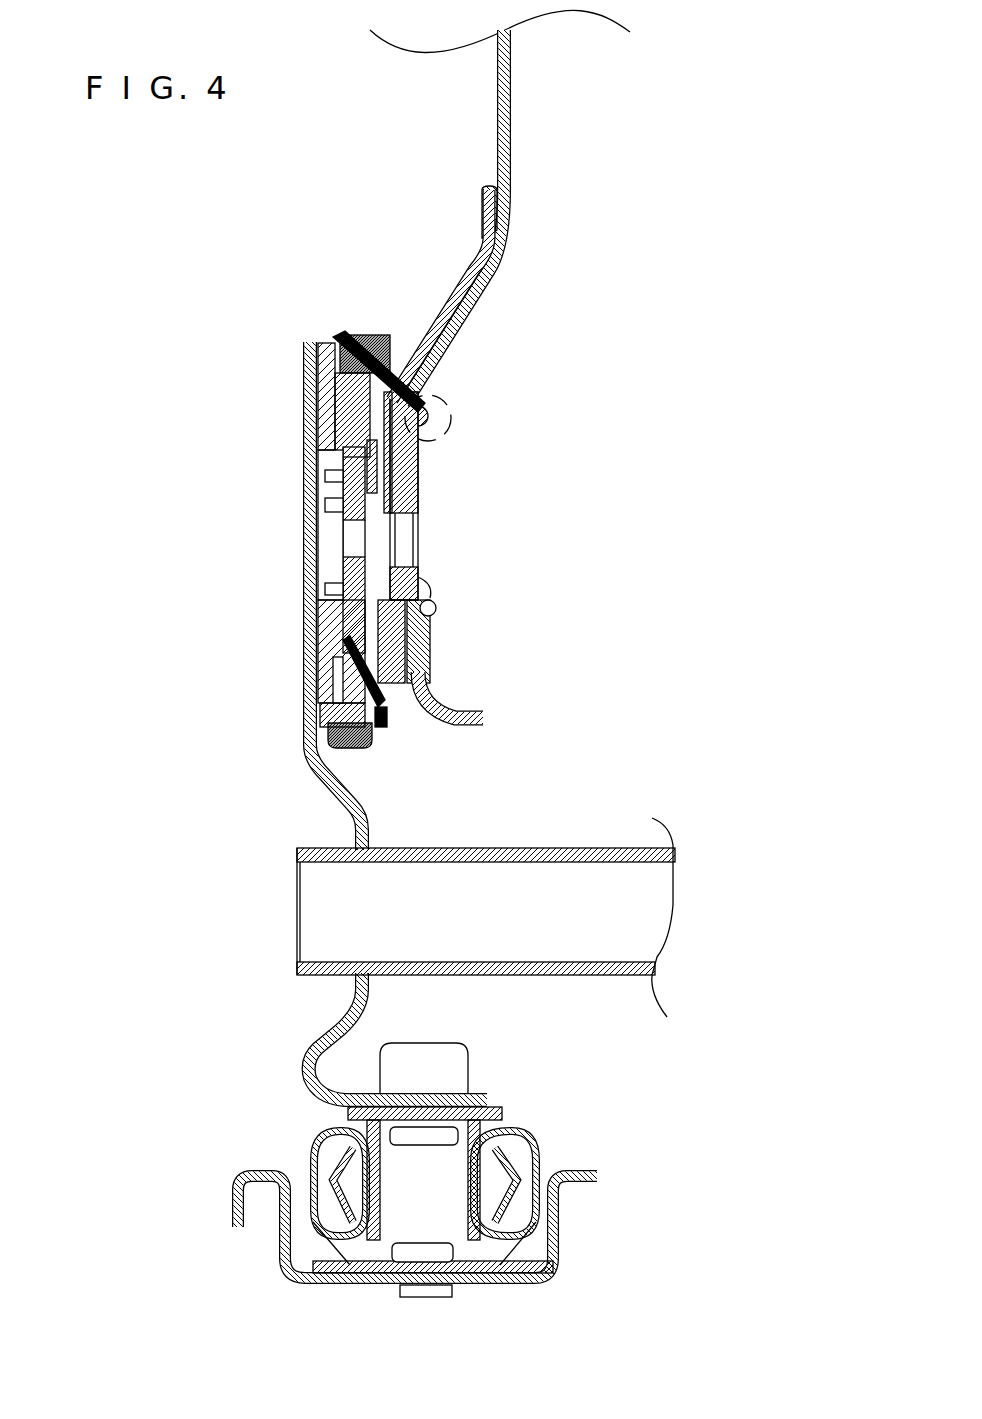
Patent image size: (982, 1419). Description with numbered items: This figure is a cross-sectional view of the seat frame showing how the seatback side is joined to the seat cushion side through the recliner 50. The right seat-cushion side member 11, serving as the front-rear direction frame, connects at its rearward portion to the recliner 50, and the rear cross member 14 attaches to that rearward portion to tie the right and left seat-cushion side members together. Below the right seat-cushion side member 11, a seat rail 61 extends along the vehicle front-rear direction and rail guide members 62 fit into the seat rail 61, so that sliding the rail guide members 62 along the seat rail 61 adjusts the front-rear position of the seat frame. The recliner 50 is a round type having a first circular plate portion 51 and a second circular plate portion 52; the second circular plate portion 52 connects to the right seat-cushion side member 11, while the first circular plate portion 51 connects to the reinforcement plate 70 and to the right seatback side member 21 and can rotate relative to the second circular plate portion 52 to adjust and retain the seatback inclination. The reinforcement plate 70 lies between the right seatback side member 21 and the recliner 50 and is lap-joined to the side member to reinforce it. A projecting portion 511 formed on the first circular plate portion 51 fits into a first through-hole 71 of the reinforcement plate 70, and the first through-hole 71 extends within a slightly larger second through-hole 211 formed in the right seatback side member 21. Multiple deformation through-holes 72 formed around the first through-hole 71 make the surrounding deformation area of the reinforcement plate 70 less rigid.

The right seat-cushion side member 11 is at (305, 442).
The rear cross member 14 is at (560, 847).
The right seatback side member 21 is at (510, 108).
The recliner 50 is at (350, 305).
The first circular plate portion 51 is at (390, 705).
The second circular plate portion 52 is at (312, 407).
The projecting portion 511 is at (418, 490).
The seat rail 61 is at (325, 1138).
The rail guide member 62 is at (383, 1186).
The reinforcement plate 70 is at (483, 207).
The first through-hole 71 is at (420, 583).
The deformation through-hole 72 is at (460, 272).
The second through-hole 211 is at (442, 613).